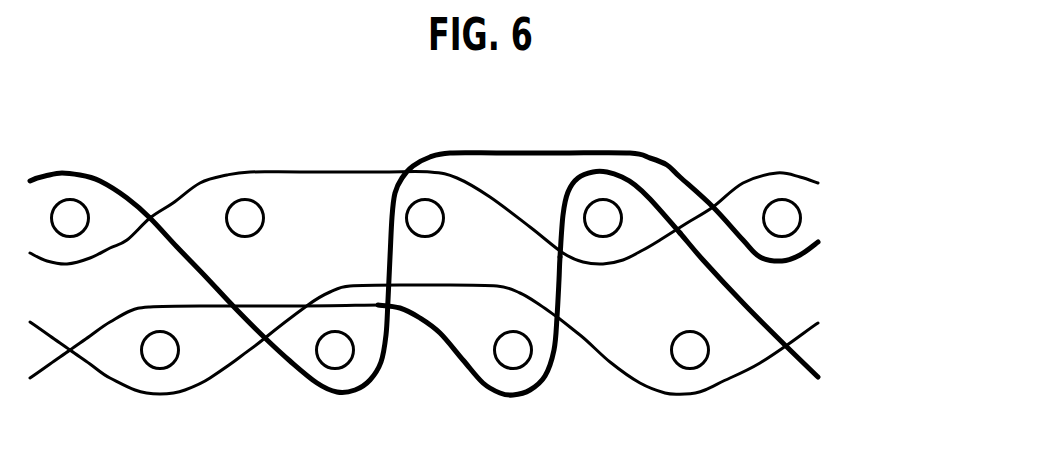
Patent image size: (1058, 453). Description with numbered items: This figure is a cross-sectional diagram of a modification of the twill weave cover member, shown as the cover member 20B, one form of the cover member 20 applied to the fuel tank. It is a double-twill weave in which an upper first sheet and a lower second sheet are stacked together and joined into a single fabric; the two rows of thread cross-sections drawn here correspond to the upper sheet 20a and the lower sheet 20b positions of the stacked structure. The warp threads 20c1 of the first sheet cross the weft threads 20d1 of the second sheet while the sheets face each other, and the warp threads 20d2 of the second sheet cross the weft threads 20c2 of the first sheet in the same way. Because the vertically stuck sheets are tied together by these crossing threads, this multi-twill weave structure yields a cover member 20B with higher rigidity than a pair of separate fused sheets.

The cover member 20 is at (476, 259).
The cover member 20B is at (782, 157).
The twill weave sheet 20a is at (829, 217).
The twill weave sheet 20b is at (829, 351).
The warp threads 20c1 is at (100, 178).
The weft threads 20c2 is at (603, 217).
The weft threads 20d1 is at (337, 350).
The warp threads 20d2 is at (747, 312).